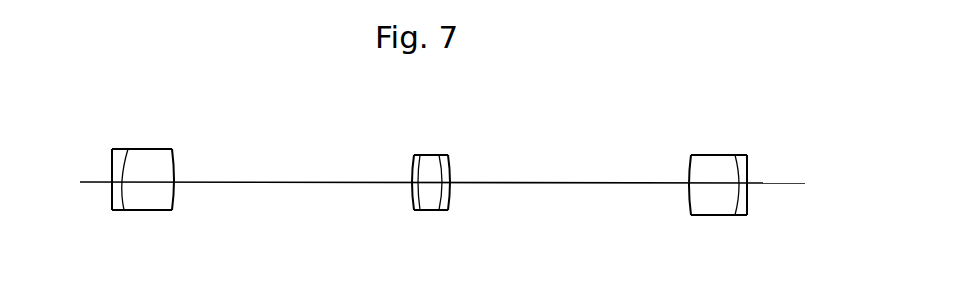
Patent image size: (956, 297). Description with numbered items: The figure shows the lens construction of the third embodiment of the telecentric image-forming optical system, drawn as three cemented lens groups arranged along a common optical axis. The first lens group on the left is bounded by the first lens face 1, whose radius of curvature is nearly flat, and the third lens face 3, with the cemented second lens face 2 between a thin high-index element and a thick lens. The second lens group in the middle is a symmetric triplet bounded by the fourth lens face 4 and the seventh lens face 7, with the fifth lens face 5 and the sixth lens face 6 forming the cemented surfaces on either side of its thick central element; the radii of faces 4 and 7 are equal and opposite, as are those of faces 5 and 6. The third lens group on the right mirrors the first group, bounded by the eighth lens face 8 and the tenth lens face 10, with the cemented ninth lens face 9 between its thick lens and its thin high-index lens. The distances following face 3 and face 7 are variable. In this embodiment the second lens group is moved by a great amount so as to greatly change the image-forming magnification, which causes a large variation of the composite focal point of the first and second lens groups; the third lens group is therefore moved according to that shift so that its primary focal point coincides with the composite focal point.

The first lens face 1 is at (112, 186).
The second lens face 2 is at (123, 204).
The third lens face 3 is at (173, 163).
The fourth lens face 4 is at (412, 187).
The fifth lens face 5 is at (418, 206).
The sixth lens face 6 is at (441, 165).
The seventh lens face 7 is at (449, 204).
The eighth lens face 8 is at (690, 196).
The ninth lens face 9 is at (738, 163).
The tenth lens face 10 is at (748, 205).